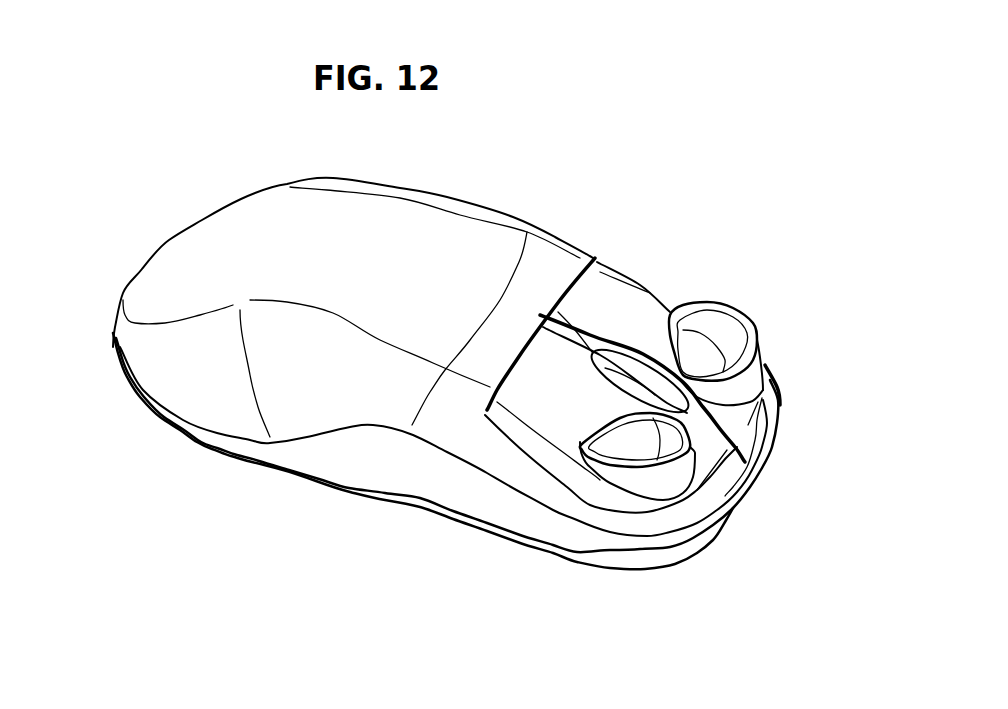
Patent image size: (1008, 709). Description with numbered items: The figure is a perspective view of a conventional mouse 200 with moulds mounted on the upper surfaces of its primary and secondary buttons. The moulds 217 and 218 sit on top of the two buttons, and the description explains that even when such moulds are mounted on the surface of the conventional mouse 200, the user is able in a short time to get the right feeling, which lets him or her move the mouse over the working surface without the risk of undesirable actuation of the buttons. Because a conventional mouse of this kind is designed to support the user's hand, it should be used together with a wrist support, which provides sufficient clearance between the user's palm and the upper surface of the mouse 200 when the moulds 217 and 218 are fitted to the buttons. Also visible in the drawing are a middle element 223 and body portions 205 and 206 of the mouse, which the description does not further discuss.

The conventional mouse 200 is at (500, 163).
The middle button 223 is at (643, 357).
The mould 217 is at (753, 320).
The upper housing 205 is at (737, 407).
The lower housing 206 is at (710, 457).
The mould 218 is at (647, 487).